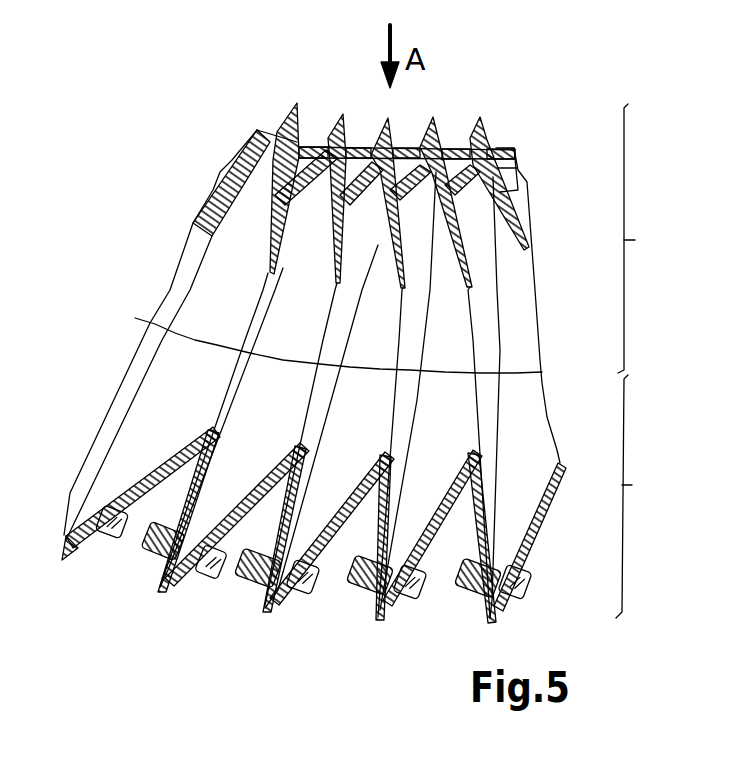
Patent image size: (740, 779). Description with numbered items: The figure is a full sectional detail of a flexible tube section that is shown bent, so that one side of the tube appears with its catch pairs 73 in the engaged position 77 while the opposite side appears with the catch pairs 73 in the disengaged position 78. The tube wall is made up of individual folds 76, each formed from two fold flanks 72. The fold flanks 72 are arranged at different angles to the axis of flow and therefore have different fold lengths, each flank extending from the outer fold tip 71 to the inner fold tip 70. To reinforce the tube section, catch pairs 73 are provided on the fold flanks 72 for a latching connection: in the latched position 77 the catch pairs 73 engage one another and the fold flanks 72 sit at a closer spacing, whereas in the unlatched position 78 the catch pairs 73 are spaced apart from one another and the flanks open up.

The inner fold tip 70 is at (492, 435).
The outer fold tip 71 is at (375, 636).
The fold flanks 72 is at (141, 532).
The catch pairs 73 is at (205, 568).
The folds 76 is at (473, 150).
The engaged position 77 is at (641, 238).
The disengaged position 78 is at (637, 496).